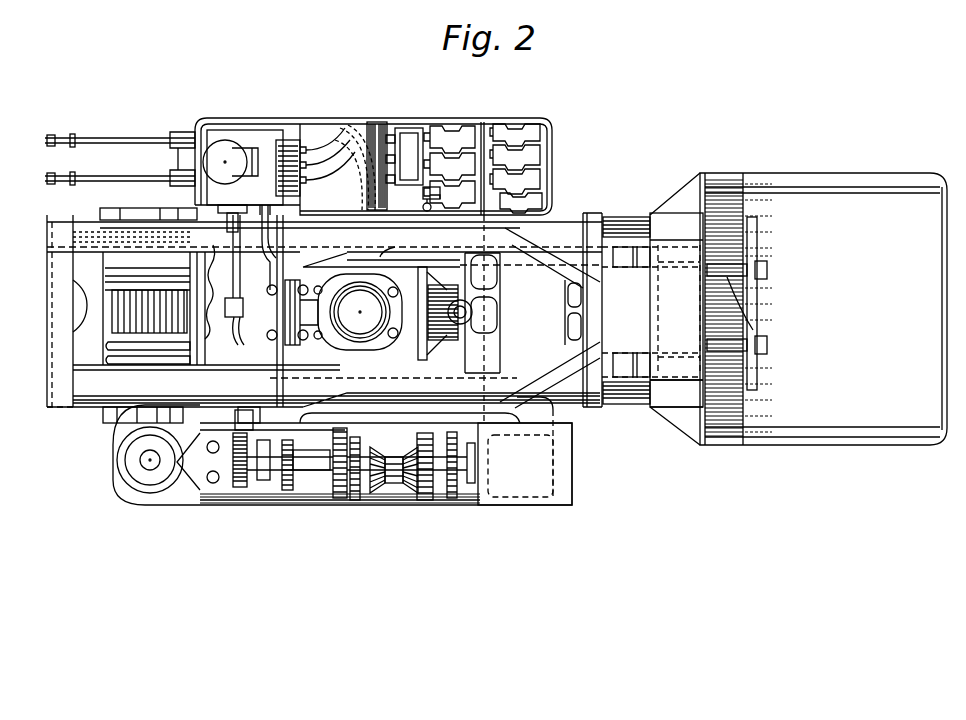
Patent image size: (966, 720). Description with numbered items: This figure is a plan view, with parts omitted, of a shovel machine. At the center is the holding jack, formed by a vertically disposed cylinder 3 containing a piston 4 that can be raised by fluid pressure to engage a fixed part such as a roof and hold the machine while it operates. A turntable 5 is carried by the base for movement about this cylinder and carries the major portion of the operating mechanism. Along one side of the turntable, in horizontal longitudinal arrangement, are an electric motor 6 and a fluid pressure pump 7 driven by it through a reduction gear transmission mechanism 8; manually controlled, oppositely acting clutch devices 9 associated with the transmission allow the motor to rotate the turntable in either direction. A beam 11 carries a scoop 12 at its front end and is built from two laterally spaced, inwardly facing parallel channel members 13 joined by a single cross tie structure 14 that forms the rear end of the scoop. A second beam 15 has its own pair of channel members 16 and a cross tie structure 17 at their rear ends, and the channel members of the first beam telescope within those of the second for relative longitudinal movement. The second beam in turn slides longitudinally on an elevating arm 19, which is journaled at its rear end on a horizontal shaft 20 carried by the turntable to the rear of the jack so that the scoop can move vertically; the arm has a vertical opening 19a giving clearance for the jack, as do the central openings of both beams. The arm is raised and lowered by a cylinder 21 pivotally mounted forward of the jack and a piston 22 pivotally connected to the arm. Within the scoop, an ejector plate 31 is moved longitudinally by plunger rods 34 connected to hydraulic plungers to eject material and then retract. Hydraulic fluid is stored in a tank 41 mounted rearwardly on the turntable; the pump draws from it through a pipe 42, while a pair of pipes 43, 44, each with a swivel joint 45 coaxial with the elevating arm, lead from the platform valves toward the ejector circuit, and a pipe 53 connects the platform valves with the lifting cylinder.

The vertically disposed cylinder 3 is at (355, 303).
The piston 4 is at (470, 212).
The turntable 5 is at (572, 425).
The electric motor 6 is at (515, 497).
The fluid pressure pump 7 is at (262, 487).
The reduction gear transmission mechanism 8 is at (455, 500).
The clutch devices 9 is at (422, 498).
The beam 11 is at (690, 397).
The scoop 12 is at (792, 445).
The channel members 13 is at (673, 240).
The cross tie structure 14 is at (670, 392).
The second beam 15 is at (618, 404).
The channel members 16 is at (100, 222).
The cross tie structure 17 is at (58, 395).
The elevating arm 19 is at (548, 385).
The vertical opening 19a is at (382, 257).
The horizontal shaft 20 is at (308, 333).
The cylinder 21 is at (465, 316).
The piston 22 is at (472, 306).
The ejector plate 31 is at (760, 306).
The plunger rods 34 is at (727, 341).
The tank 41 is at (222, 142).
The pipe 42 is at (248, 355).
The pipe 43 is at (332, 123).
The pipe 44 is at (370, 122).
The swivel joint 45 is at (297, 140).
The pipe 53 is at (437, 206).